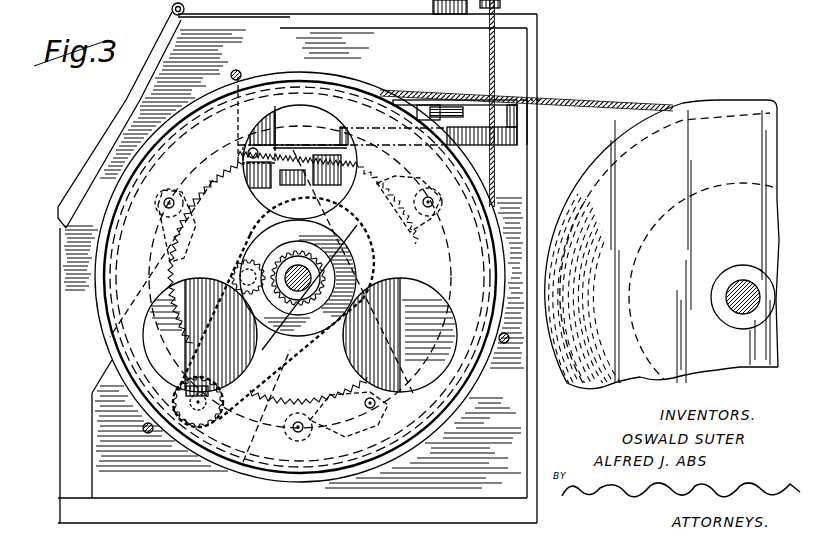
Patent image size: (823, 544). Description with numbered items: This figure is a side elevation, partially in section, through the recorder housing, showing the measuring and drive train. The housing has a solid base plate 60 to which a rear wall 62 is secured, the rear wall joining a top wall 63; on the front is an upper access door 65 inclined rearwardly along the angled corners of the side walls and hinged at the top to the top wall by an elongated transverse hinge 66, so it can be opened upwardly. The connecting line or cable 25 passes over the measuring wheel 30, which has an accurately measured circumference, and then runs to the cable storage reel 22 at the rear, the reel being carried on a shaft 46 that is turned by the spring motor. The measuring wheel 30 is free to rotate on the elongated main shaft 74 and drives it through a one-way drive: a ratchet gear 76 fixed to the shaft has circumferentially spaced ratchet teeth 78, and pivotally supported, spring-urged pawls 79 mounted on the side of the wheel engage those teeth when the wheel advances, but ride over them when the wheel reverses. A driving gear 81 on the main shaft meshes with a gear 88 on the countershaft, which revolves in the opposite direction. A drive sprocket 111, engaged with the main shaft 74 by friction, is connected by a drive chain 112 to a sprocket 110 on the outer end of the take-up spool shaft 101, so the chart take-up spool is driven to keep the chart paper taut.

The cable storage reel 22 is at (722, 130).
The connecting line or cable 25 is at (615, 96).
The measuring wheel 30 is at (448, 378).
The shaft 46 is at (728, 292).
The base plate 60 is at (137, 513).
The rear wall 62 is at (537, 192).
The top wall 63 is at (368, 24).
The upper access door 65 is at (116, 118).
The elongated transverse hinge 66 is at (171, 9).
The main shaft 74 is at (308, 284).
The ratchet gear 76 is at (414, 254).
The ratchet teeth 78 is at (380, 186).
The pawls 79 is at (412, 184).
The driving gear 81 is at (270, 327).
The gear 88 is at (245, 262).
The shaft 101 is at (197, 430).
The sprocket 110 is at (162, 408).
The drive sprocket 111 is at (363, 272).
The drive chain 112 is at (243, 464).